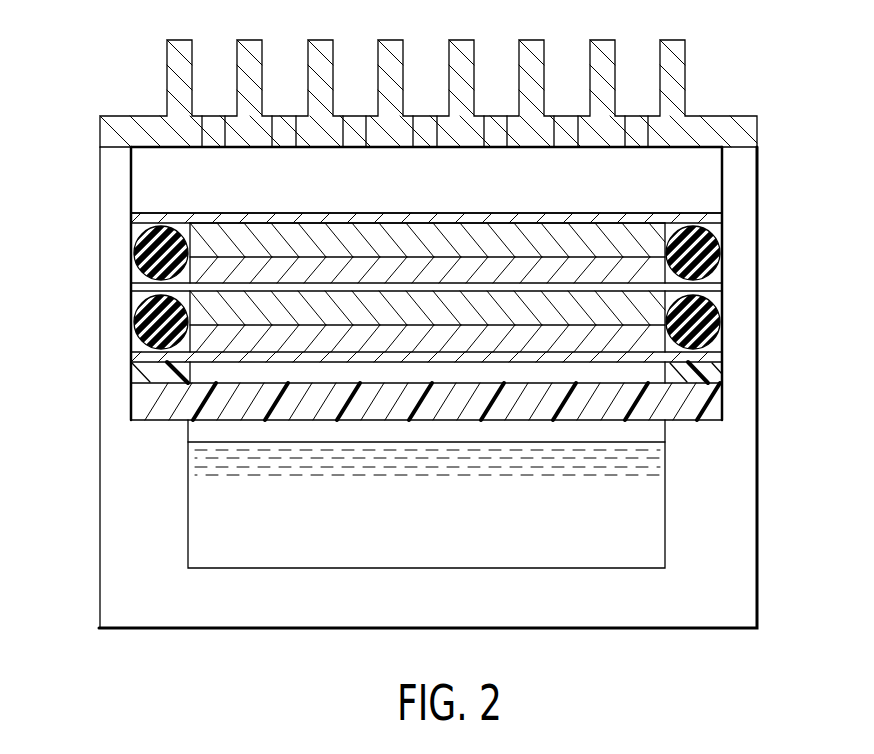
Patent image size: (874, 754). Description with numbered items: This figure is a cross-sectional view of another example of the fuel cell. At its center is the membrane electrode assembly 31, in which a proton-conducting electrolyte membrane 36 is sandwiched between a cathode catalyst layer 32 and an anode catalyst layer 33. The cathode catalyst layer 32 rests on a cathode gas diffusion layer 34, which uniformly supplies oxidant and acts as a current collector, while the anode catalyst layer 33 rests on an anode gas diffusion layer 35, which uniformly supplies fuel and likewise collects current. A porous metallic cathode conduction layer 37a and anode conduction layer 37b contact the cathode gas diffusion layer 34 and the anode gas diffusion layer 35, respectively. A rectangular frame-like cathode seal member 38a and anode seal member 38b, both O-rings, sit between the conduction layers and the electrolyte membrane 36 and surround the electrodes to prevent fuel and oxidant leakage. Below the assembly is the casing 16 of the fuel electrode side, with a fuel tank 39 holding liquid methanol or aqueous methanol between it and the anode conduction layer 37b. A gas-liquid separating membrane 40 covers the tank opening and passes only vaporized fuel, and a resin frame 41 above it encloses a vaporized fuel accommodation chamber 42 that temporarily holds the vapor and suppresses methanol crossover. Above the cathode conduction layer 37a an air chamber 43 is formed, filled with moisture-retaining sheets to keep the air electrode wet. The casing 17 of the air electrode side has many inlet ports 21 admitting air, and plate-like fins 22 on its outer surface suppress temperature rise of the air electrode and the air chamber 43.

The casing of the fuel electrode side 16 is at (715, 504).
The casing of the air electrode side 17 is at (708, 120).
The inlet ports 21 is at (283, 128).
The plate-like fins 22 is at (335, 92).
The membrane electrode assembly 31 is at (490, 291).
The cathode catalyst layer 32 is at (652, 270).
The anode catalyst layer 33 is at (652, 316).
The cathode gas diffusion layer 34 is at (652, 242).
The anode gas diffusion layer 35 is at (652, 345).
The electrolyte membrane 36 is at (717, 287).
The cathode conduction layer 37a is at (722, 215).
The anode conduction layer 37b is at (722, 357).
The cathode seal member 38a is at (131, 244).
The anode seal member 38b is at (132, 312).
The fuel tank 39 is at (232, 524).
The gas-liquid separating membrane 40 is at (135, 402).
The frame 41 is at (135, 377).
The vaporized fuel accommodation chamber 42 is at (703, 373).
The air chamber 43 is at (707, 183).